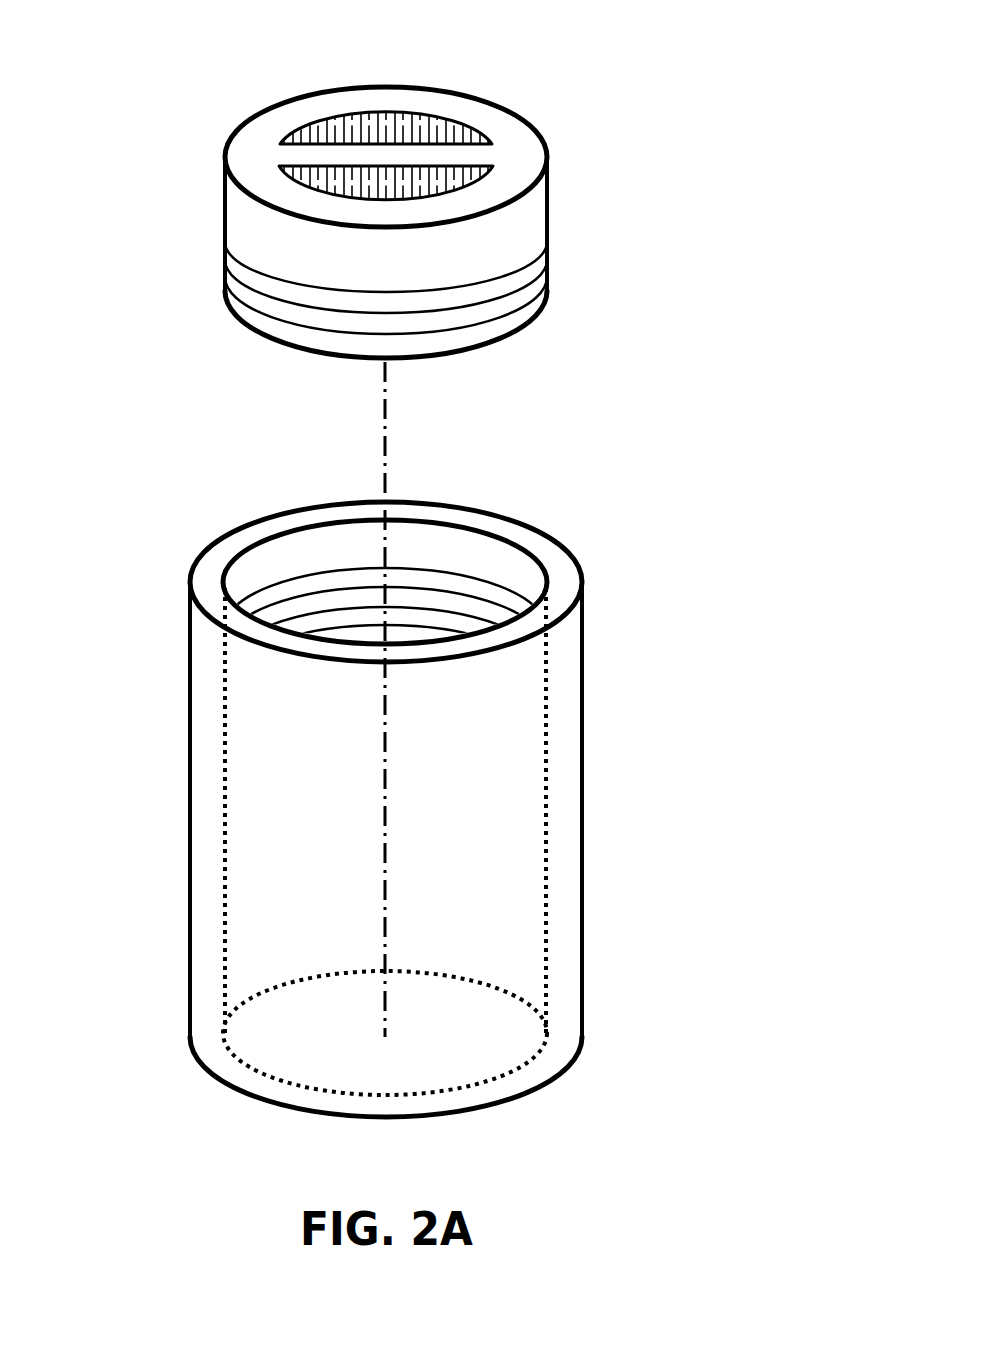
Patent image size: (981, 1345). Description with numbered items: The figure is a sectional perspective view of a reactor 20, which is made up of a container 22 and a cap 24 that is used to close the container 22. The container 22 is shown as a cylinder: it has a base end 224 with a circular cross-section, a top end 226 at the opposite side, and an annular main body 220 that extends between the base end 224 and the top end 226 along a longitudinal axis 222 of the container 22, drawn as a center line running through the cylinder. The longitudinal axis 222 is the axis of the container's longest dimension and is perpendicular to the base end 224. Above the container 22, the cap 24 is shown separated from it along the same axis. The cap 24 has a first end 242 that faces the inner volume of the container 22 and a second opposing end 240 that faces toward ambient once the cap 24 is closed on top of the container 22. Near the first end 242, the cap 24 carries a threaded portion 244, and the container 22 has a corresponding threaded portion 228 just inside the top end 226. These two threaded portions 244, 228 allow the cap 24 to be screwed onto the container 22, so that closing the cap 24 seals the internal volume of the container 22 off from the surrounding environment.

The reactor 20 is at (70, 33).
The container 22 is at (614, 534).
The cap 24 is at (617, 80).
The main body 220 is at (188, 682).
The longitudinal axis 222 is at (385, 860).
The base end 224 is at (262, 1072).
The top end 226 is at (228, 569).
The threaded portion 228 is at (335, 568).
The second opposing end 240 is at (260, 150).
The first end 242 is at (475, 350).
The threaded portion 244 is at (245, 272).